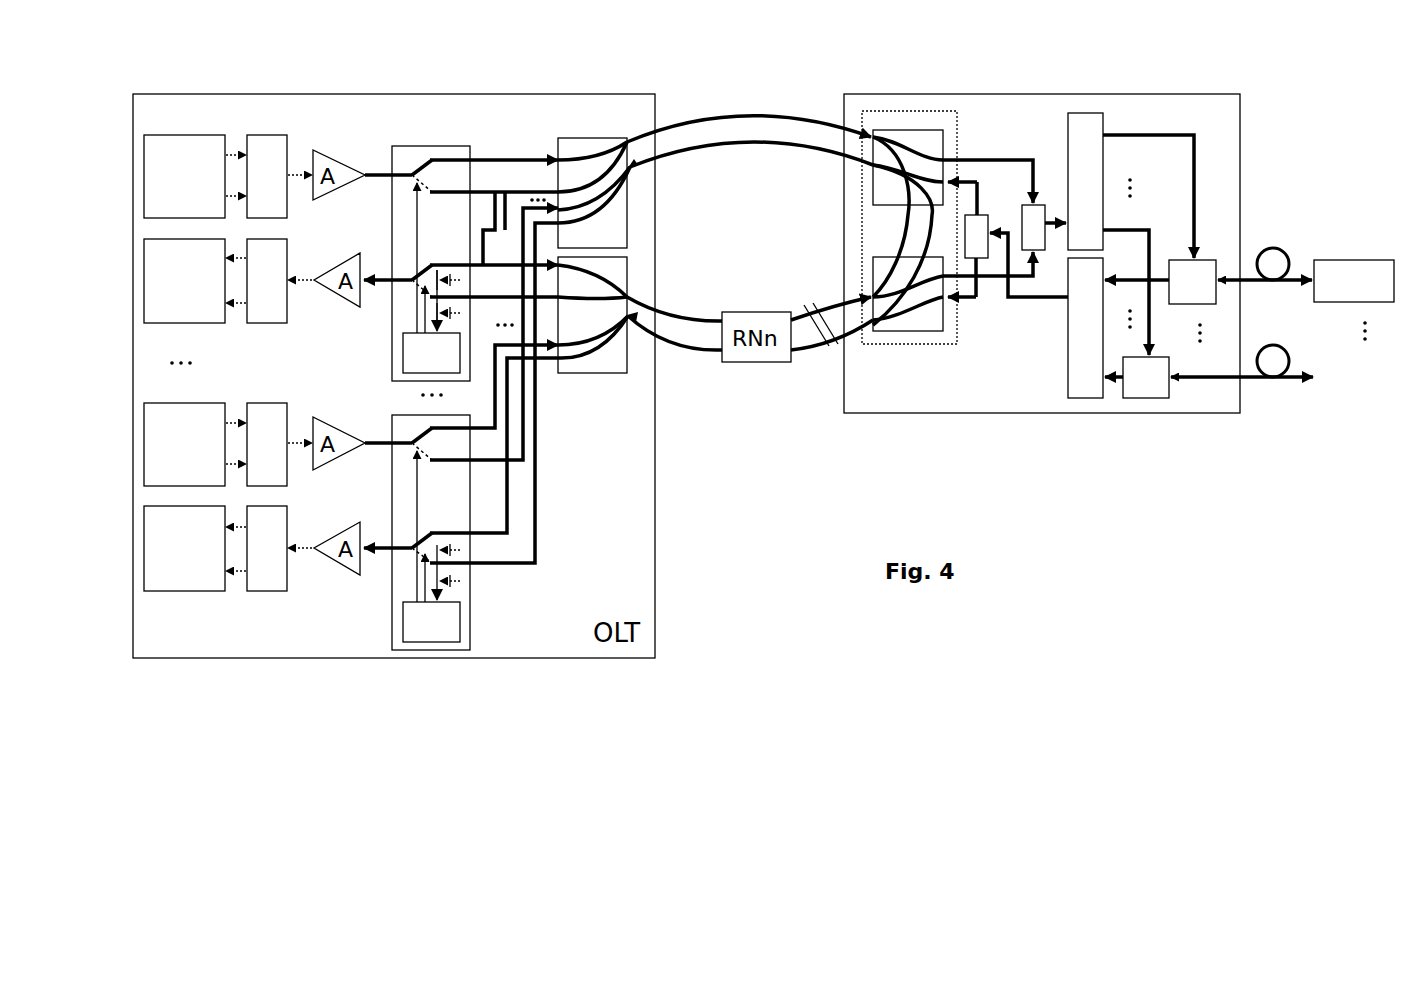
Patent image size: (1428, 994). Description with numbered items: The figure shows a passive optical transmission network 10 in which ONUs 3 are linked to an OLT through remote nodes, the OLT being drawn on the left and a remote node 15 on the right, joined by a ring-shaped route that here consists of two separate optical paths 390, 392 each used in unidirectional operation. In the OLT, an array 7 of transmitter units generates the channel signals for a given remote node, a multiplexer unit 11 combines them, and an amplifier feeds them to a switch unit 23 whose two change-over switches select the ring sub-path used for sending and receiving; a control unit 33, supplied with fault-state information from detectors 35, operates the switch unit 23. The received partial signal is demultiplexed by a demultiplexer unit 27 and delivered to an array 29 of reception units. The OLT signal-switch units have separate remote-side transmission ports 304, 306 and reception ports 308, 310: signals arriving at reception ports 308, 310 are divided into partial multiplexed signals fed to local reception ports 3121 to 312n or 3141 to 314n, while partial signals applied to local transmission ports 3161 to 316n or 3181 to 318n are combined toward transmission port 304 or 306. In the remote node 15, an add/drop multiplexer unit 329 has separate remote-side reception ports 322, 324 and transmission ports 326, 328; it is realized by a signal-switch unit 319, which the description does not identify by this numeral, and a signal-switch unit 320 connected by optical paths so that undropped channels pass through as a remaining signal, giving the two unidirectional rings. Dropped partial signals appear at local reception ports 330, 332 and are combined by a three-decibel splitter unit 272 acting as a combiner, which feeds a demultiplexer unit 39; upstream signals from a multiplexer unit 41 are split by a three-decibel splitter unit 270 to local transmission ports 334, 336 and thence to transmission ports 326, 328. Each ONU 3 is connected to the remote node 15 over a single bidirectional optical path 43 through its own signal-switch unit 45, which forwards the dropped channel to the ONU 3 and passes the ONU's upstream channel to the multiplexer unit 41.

The optical network termination node (ONU) 3 is at (1350, 265).
The array of transmitter units 7 is at (188, 148).
The passive optical transmission network 10 is at (755, 430).
The multiplexer unit 11 is at (282, 140).
The remote node (RN) 15 is at (1150, 98).
The switch unit 23 is at (417, 643).
The demultiplexer unit 27 is at (282, 322).
The array of reception units 29 is at (180, 322).
The control unit 33 is at (403, 352).
The detector 35 is at (455, 281).
The demultiplexer unit 39 is at (1085, 112).
The multiplexer unit 41 is at (1068, 373).
The bidirectional optical path 43 is at (1262, 248).
The signal-switch unit 45 is at (1208, 268).
The 3 dB splitter unit 270 is at (1003, 208).
The 3 dB splitter unit (combiner) 272 is at (1038, 200).
The remote-side transmission port 304 is at (627, 147).
The remote-side transmission port 306 is at (630, 290).
The remote-side reception port 308 is at (636, 170).
The remote-side reception port 310 is at (632, 322).
The local reception port 3121 is at (552, 153).
The local reception port 312n is at (535, 205).
The local reception port 3141 is at (557, 350).
The local reception port 314n is at (560, 373).
The local transmission port 3161 is at (557, 190).
The local transmission port 316n is at (553, 220).
The local transmission port 3181 is at (561, 267).
The local transmission port 318n is at (552, 298).
The coupler port 319 is at (878, 193).
The signal-switch unit 320 is at (868, 262).
The remote-side reception port 322 is at (863, 135).
The remote-side reception port 324 is at (866, 294).
The remote-side transmission port 326 is at (863, 158).
The remote-side transmission port 328 is at (860, 325).
The add/drop multiplexer unit 329 is at (912, 110).
The local reception port 330 is at (953, 160).
The local reception port 332 is at (955, 278).
The local transmission port 334 is at (953, 180).
The local transmission port 336 is at (955, 300).
The ring-shaped optical path 390 is at (785, 112).
The ring-shaped optical path 392 is at (742, 142).